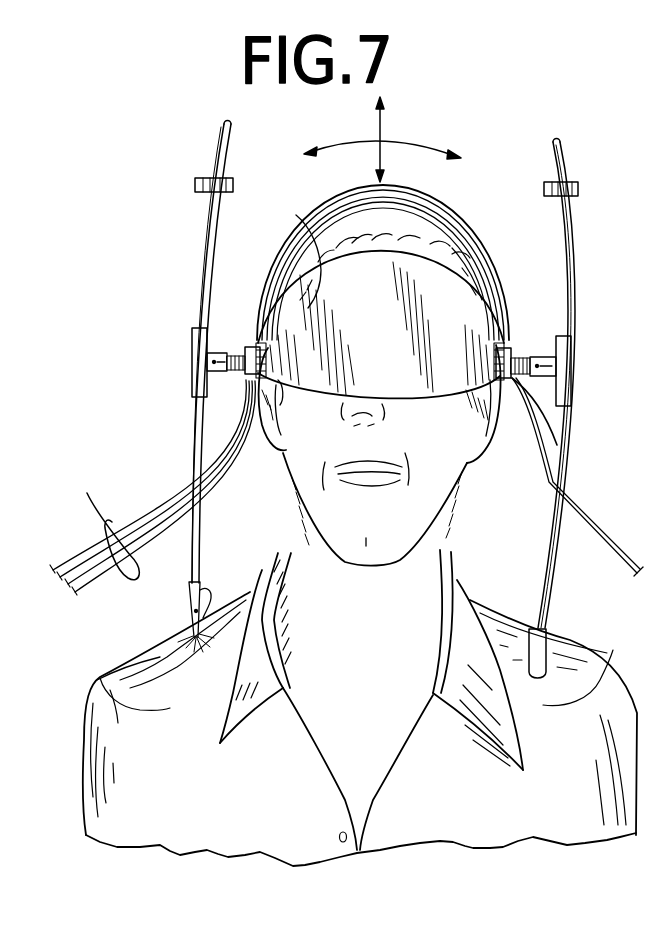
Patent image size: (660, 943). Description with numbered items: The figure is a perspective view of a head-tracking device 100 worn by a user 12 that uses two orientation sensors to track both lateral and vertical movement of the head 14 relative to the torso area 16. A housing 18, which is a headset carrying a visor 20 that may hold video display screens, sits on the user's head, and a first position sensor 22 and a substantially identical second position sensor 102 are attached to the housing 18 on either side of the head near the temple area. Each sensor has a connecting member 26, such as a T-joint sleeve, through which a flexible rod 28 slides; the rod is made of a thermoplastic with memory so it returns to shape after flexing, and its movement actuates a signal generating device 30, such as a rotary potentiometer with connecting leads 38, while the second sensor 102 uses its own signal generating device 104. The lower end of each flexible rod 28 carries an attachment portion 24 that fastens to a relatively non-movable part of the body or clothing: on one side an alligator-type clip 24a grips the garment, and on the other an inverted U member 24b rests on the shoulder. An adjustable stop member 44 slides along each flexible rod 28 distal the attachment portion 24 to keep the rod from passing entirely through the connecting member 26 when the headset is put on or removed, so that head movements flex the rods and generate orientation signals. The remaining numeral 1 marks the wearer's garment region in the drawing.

The wearer body 1 is at (597, 697).
The user 12 is at (614, 514).
The head 14 is at (479, 256).
The torso area 16 is at (97, 681).
The housing 18 is at (326, 219).
The visor 20 is at (452, 320).
The position sensor 22 is at (189, 365).
The attachment portion 24 is at (189, 636).
The alligator-type clip 24a is at (207, 598).
The inverted U member 24b is at (545, 648).
The connecting member 26 is at (193, 386).
The flexible rod 28 is at (205, 233).
The signal generating device 30 is at (242, 340).
The connecting leads 38 is at (152, 487).
The adjustable stop member 44 is at (217, 178).
The head-tracking device 100 is at (480, 172).
The second position sensor 102 is at (585, 358).
The signal generating device 104 is at (559, 446).